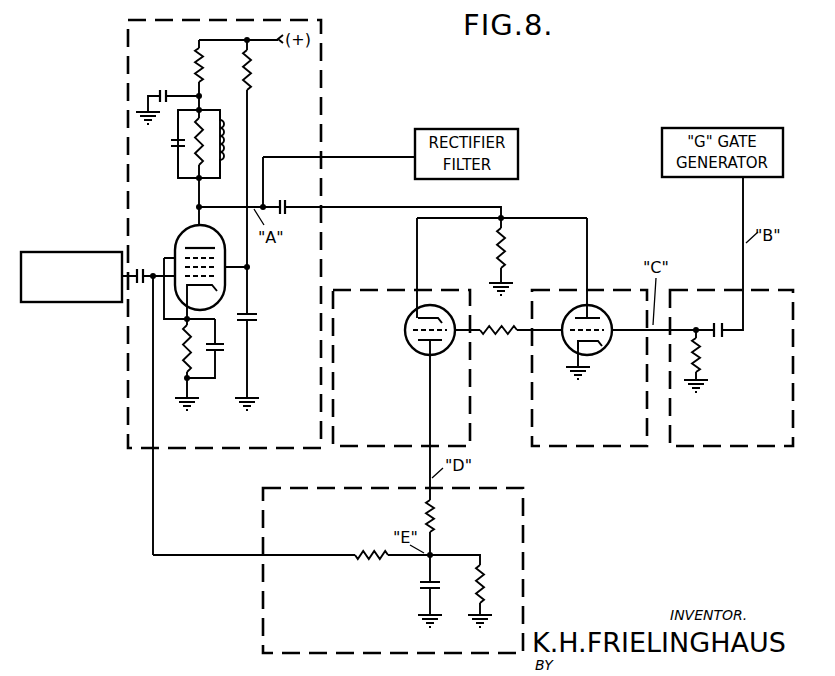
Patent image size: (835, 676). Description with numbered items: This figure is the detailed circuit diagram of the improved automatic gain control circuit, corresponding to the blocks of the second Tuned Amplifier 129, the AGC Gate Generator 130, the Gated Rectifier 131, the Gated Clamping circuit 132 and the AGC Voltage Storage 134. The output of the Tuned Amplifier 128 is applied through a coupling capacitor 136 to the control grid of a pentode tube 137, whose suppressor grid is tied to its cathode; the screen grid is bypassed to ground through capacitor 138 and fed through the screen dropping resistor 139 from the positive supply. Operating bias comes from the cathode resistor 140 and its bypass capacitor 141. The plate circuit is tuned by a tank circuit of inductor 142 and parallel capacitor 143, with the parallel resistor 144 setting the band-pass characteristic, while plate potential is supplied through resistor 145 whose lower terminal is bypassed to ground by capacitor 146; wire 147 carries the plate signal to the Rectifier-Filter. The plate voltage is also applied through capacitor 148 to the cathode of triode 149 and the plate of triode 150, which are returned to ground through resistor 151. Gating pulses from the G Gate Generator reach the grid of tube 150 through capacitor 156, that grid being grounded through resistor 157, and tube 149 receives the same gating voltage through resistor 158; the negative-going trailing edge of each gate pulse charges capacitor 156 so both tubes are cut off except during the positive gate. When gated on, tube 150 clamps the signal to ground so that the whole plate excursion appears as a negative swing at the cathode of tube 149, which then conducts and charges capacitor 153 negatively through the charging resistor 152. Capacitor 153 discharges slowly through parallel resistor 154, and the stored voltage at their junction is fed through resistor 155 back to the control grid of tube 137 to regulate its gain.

The Tuned Amplifier 128 is at (85, 295).
The second Tuned Amplifier 129 is at (128, 90).
The AGC Gate Generator 130 is at (680, 447).
The Gated Rectifier 131 is at (375, 450).
The Gated Clamping circuit 132 is at (547, 450).
The AGC Voltage Storage 134 is at (263, 595).
The coupling capacitor 136 is at (140, 263).
The pentode tube 137 is at (182, 235).
The capacitor 138 is at (252, 313).
The screen dropping resistor 139 is at (251, 70).
The cathode resistor 140 is at (187, 357).
The bypass capacitor 141 is at (220, 353).
The inductor 142 is at (226, 142).
The parallel capacitor 143 is at (176, 148).
The parallel resistor 144 is at (200, 130).
The resistor 145 is at (198, 66).
The capacitor 146 is at (162, 92).
The wire 147 is at (345, 153).
The capacitor 148 is at (286, 200).
The triode 149 is at (408, 323).
The triode 150 is at (620, 313).
The resistor 151 is at (506, 250).
The charging resistor 152 is at (435, 523).
The capacitor 153 is at (424, 582).
The parallel resistor 154 is at (483, 580).
The resistor 155 is at (385, 550).
The capacitor 156 is at (713, 325).
The resistor 157 is at (700, 358).
The resistor 158 is at (506, 340).